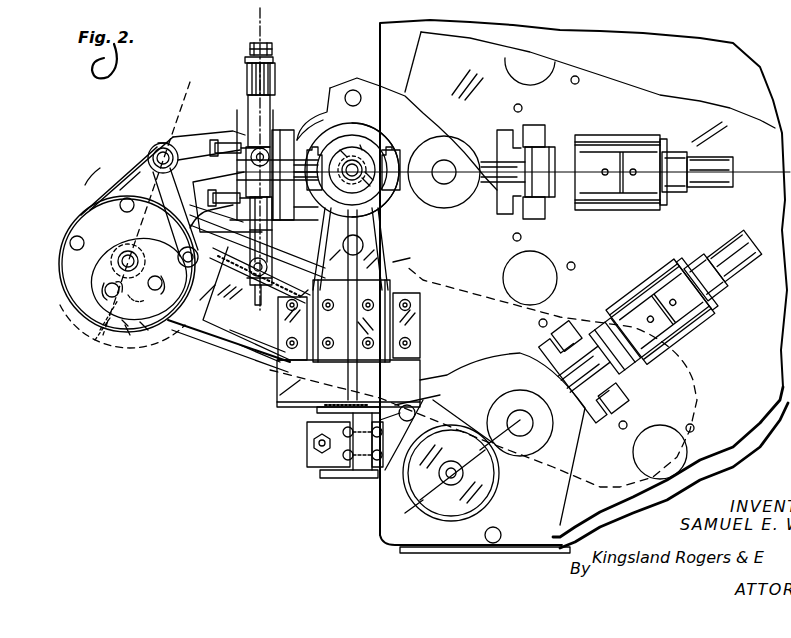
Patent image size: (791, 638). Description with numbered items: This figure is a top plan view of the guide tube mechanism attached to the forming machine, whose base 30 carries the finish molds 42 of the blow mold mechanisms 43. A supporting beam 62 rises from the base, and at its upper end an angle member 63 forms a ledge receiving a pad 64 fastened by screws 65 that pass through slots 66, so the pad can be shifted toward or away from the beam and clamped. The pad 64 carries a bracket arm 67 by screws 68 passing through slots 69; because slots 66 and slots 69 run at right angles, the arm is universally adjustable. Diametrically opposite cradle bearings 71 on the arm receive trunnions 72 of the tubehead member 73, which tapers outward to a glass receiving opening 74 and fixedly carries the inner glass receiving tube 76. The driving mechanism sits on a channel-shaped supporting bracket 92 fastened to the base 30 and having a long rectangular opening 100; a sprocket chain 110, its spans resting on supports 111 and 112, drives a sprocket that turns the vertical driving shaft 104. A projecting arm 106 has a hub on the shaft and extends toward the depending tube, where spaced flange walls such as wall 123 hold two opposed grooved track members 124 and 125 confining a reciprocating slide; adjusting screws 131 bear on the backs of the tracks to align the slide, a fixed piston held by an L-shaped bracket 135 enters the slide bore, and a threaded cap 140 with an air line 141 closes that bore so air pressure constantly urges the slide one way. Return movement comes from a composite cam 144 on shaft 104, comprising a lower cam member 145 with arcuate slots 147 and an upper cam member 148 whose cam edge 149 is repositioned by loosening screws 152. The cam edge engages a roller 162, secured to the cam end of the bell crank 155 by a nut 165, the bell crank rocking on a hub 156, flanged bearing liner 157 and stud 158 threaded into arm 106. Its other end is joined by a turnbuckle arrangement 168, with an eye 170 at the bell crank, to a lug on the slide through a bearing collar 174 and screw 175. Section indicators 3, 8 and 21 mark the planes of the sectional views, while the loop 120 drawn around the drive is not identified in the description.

The section line 3 is at (211, 168).
The section line 8 is at (268, 18).
The section line 21 is at (190, 82).
The base 30 is at (692, 50).
The finish molds 42 is at (372, 78).
The blow mold mechanisms 43 is at (561, 130).
The supporting beam 62 is at (345, 477).
The angle member 63 is at (285, 390).
The pad 64 is at (410, 330).
The screws 65 is at (300, 307).
The slots 66 is at (293, 350).
The bracket arm 67 is at (400, 264).
The screws 68 is at (336, 305).
The slots 69 is at (370, 350).
The cradle bearings 71 is at (333, 150).
The trunnions 72 is at (443, 170).
The tubehead member 73 is at (368, 142).
The glass receiving opening 74 is at (364, 184).
The inner glass receiving tube 76 is at (366, 160).
The supporting bracket 92 is at (690, 360).
The long rectangular opening 100 is at (205, 340).
The vertical driving shaft 104 is at (130, 228).
The projecting arm 106 is at (108, 184).
The sprocket chain 110 is at (235, 348).
The support 111 is at (245, 357).
The support 112 is at (257, 282).
The belt 120 is at (95, 201).
The vertical flange wall 123 is at (283, 128).
The track member 124 is at (164, 197).
The track member 125 is at (283, 214).
The adjusting screws 131 is at (230, 144).
The L-shaped bracket 135 is at (355, 238).
The threaded cap 140 is at (257, 281).
The air line 141 is at (306, 297).
The composite cam 144 is at (128, 328).
The lower cam member 145 is at (137, 322).
The arcuate slots 147 is at (80, 298).
The upper cam member 148 is at (125, 330).
The cam edge 149 is at (150, 332).
The screws 152 is at (106, 283).
The bell crank 155 is at (150, 172).
The hub 156 is at (235, 142).
The flanged bearing liner 157 is at (170, 141).
The stud 158 is at (153, 148).
The roller 162 is at (208, 312).
The nut 165 is at (186, 247).
The turnbuckle arrangement 168 is at (272, 234).
The eye 170 is at (312, 118).
The bearing collar 174 is at (256, 150).
The screw 175 is at (278, 145).